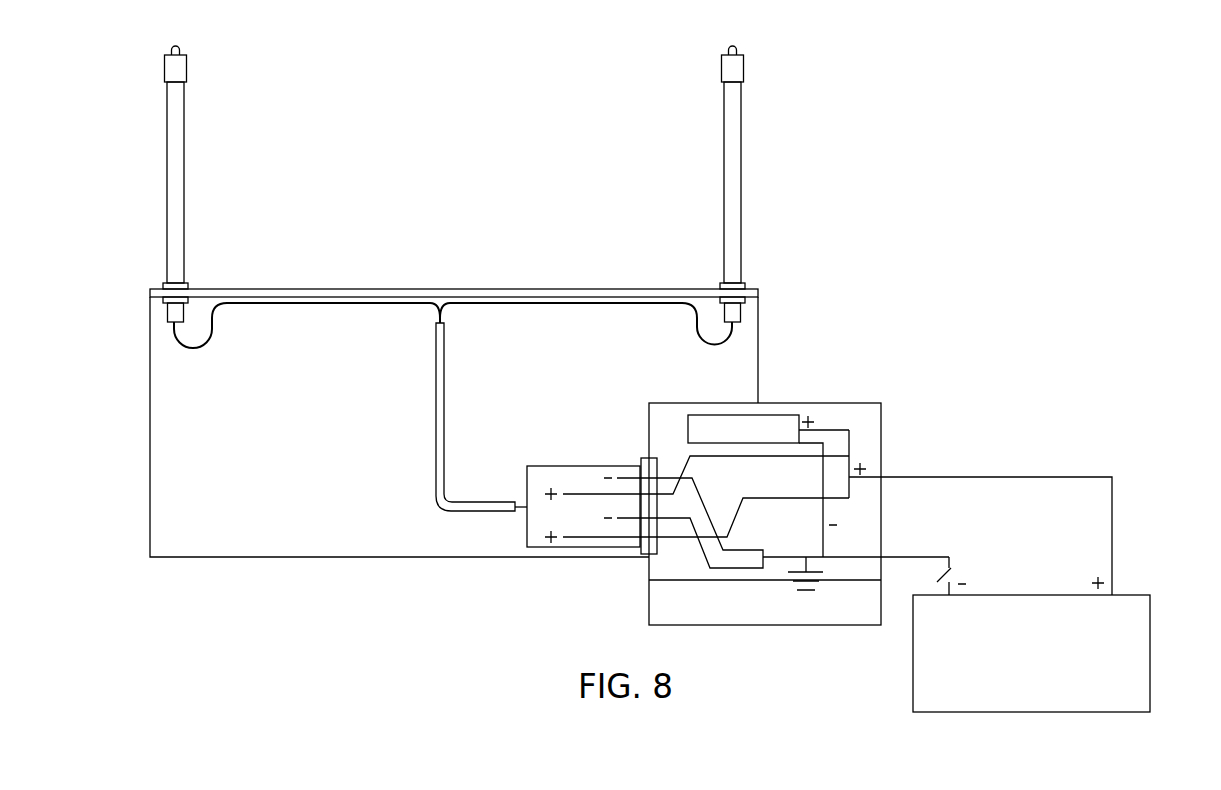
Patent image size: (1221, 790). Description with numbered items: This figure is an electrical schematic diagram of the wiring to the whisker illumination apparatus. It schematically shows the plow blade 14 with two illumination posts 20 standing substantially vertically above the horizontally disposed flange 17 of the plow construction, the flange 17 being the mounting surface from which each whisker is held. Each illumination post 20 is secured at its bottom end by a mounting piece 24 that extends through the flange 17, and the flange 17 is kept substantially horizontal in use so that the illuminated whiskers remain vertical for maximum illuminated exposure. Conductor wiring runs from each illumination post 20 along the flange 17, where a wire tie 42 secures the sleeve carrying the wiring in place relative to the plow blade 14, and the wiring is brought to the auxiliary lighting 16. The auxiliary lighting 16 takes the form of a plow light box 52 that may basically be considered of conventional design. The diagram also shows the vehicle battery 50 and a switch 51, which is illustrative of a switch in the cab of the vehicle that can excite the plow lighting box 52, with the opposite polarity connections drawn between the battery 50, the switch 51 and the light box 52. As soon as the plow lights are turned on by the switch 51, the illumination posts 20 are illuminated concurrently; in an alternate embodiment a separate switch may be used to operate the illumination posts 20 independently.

The plow blade 14 is at (301, 562).
The auxiliary lighting 16 is at (780, 415).
The flange 17 is at (360, 289).
The whisker illumination apparatus 20 is at (187, 139).
The mounting piece 24 is at (191, 280).
The wire tie 42 is at (437, 473).
The vehicle battery 50 is at (1130, 593).
The switch 51 is at (952, 575).
The plow light box 52 is at (750, 625).